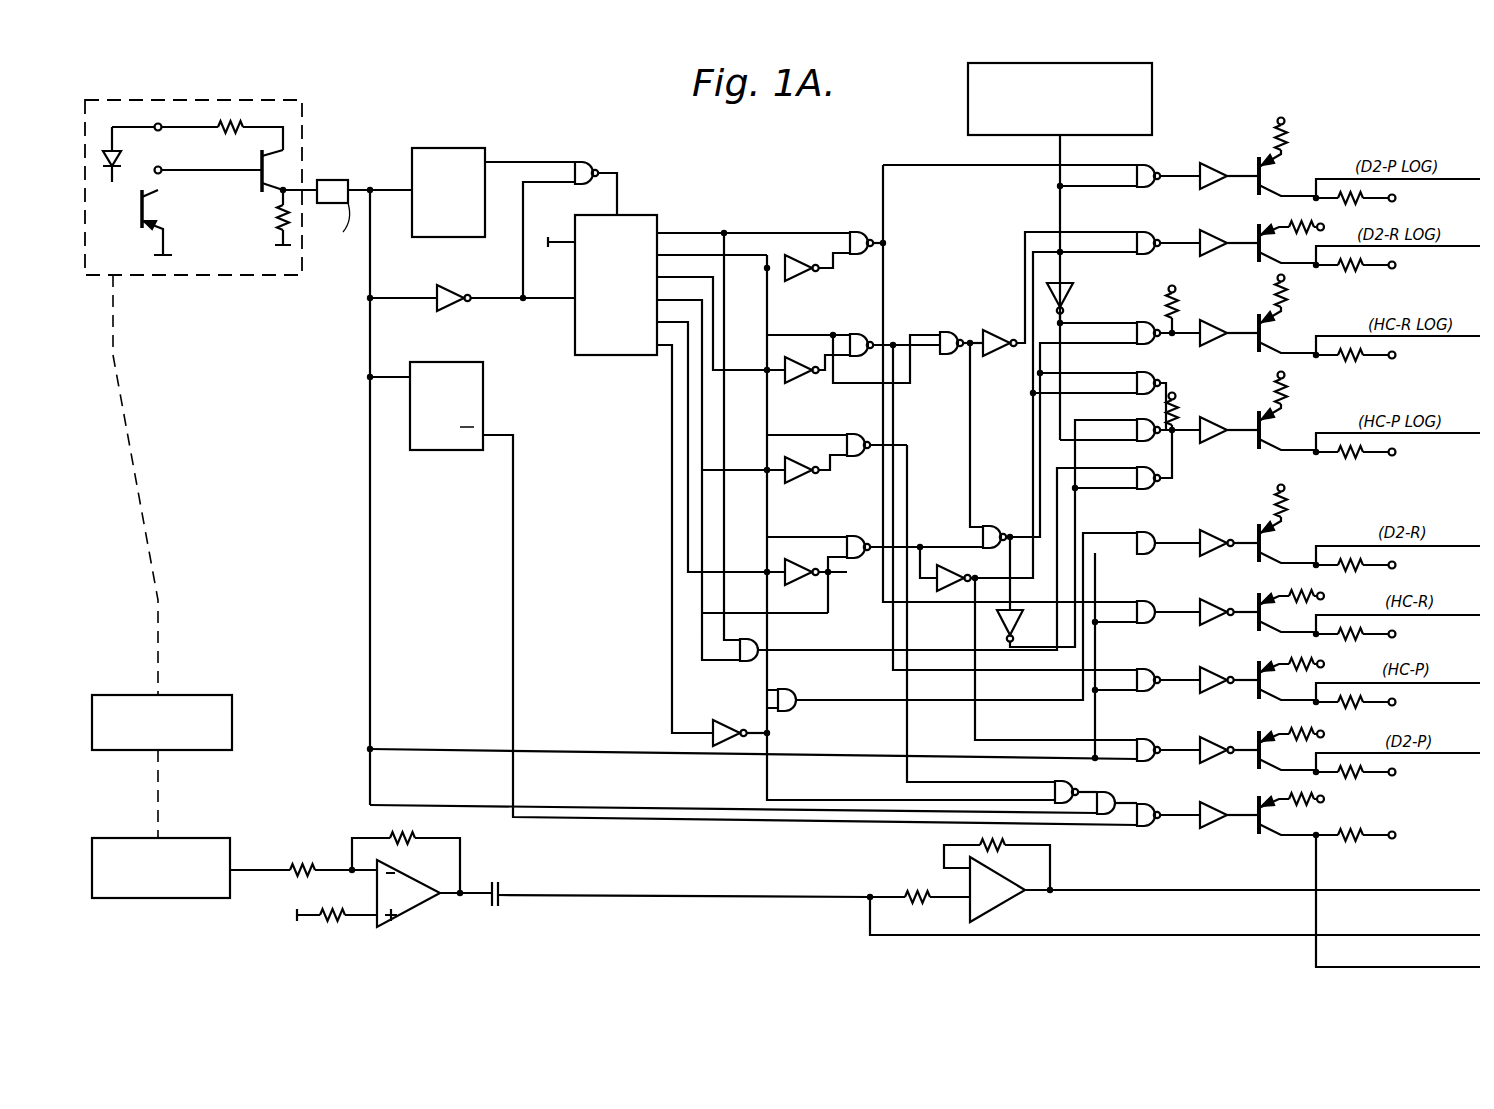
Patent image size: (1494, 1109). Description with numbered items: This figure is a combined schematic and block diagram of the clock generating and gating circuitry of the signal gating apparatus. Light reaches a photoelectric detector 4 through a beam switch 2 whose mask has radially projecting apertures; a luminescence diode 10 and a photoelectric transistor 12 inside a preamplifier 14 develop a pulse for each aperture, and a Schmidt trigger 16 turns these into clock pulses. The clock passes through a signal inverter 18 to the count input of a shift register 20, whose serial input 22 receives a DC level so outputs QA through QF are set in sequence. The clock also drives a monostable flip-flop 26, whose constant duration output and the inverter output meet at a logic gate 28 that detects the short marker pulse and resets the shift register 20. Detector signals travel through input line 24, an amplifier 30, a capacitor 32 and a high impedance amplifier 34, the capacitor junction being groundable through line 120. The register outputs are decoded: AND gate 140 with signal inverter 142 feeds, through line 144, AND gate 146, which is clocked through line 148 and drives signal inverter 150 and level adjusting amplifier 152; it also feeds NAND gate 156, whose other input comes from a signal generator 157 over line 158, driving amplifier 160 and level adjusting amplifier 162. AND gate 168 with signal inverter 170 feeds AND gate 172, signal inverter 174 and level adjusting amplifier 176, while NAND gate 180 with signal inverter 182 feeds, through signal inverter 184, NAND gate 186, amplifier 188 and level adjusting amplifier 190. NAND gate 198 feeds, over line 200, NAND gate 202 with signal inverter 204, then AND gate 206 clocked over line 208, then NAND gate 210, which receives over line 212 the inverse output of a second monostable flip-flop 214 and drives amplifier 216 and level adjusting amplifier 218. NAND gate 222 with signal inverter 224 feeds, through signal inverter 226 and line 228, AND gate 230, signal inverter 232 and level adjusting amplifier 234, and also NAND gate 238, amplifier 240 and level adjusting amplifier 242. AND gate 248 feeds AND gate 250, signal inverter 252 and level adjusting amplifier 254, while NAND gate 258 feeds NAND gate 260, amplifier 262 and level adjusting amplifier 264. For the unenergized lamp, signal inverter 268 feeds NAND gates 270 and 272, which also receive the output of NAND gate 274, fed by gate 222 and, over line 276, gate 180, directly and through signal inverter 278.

The beam switch 2 is at (210, 695).
The photoelectric detector 4 is at (210, 838).
The luminescence diode 10 is at (112, 125).
The photoelectric transistor 12 is at (160, 207).
The preamplifier 14 is at (302, 100).
The Schmidt trigger 16 is at (345, 179).
The signal inverter 18 is at (466, 288).
The shift register 20 is at (632, 355).
The serial input 22 is at (568, 247).
The input line 24 is at (255, 870).
The monostable flip-flop 26 is at (470, 148).
The logic gate 28 is at (590, 163).
The amplifier 30 is at (410, 912).
The capacitor 32 is at (500, 904).
The amplifier 34 is at (1030, 912).
The line 120 is at (1100, 935).
The AND gate 140 is at (862, 230).
The signal inverter 142 is at (800, 282).
The line 144 is at (887, 265).
The AND gate 146 is at (1152, 625).
The line 148 is at (1113, 642).
The signal inverter 150 is at (1228, 582).
The level adjusting amplifier 152 is at (1283, 620).
The NAND gate 156 is at (1147, 163).
The signal generator 157 is at (1152, 92).
The line 158 is at (1058, 150).
The amplifier 160 is at (1215, 163).
The level adjusting amplifier 162 is at (1278, 178).
The AND gate 168 is at (852, 335).
The signal inverter 170 is at (800, 384).
The AND gate 172 is at (1150, 692).
The signal inverter 174 is at (1228, 650).
The level adjusting amplifier 176 is at (1283, 688).
The NAND gate 180 is at (955, 332).
The signal inverter 182 is at (800, 484).
The signal inverter 184 is at (998, 330).
The NAND gate 186 is at (1147, 231).
The amplifier 188 is at (1215, 231).
The level adjusting amplifier 190 is at (1283, 245).
The NAND gate 198 is at (862, 458).
The line 200 is at (910, 480).
The NAND gate 202 is at (1062, 781).
The signal inverter 204 is at (735, 722).
The AND gate 206 is at (1112, 793).
The line 208 is at (713, 805).
The NAND gate 210 is at (1143, 828).
The line 212 is at (792, 821).
The second monostable flip-flop 214 is at (483, 397).
The amplifier 216 is at (1215, 828).
The level adjusting amplifier 218 is at (1280, 822).
The NAND gate 222 is at (860, 560).
The signal inverter 224 is at (798, 586).
The signal inverter 226 is at (948, 567).
The line 228 is at (970, 630).
The AND gate 230 is at (1148, 761).
The signal inverter 232 is at (1212, 738).
The level adjusting amplifier 234 is at (1283, 758).
The NAND gate 238 is at (1137, 375).
The amplifier 240 is at (1215, 346).
The level adjusting amplifier 242 is at (1280, 337).
The AND gate 248 is at (792, 712).
The AND gate 250 is at (1175, 565).
The signal inverter 252 is at (1212, 530).
The level adjusting amplifier 254 is at (1278, 547).
The NAND gate 258 is at (750, 663).
The NAND gate 260 is at (1140, 470).
The amplifier 262 is at (1212, 443).
The level adjusting amplifier 264 is at (1278, 433).
The signal inverter 268 is at (1070, 290).
The NAND gate 270 is at (1144, 322).
The NAND gate 272 is at (1140, 420).
The NAND gate 274 is at (992, 525).
The line 276 is at (947, 388).
The signal inverter 278 is at (1023, 622).